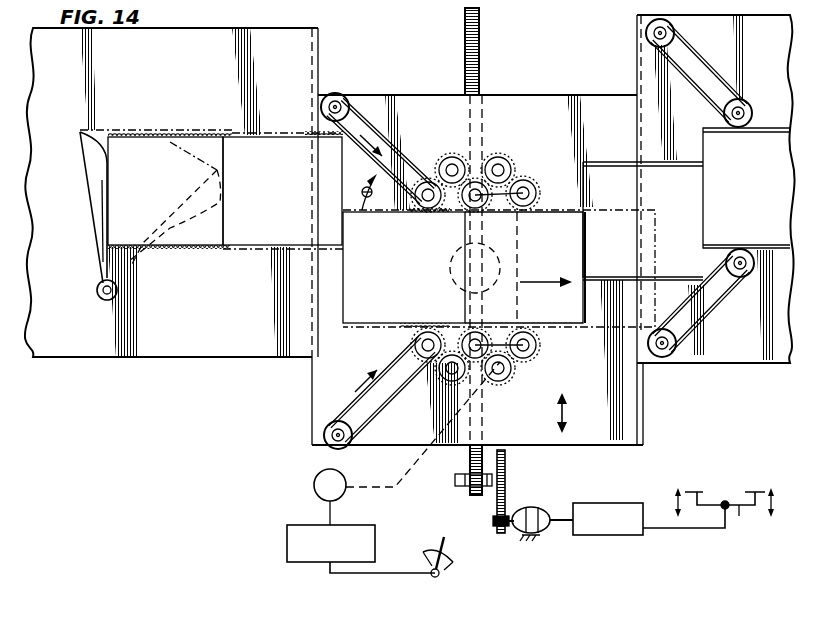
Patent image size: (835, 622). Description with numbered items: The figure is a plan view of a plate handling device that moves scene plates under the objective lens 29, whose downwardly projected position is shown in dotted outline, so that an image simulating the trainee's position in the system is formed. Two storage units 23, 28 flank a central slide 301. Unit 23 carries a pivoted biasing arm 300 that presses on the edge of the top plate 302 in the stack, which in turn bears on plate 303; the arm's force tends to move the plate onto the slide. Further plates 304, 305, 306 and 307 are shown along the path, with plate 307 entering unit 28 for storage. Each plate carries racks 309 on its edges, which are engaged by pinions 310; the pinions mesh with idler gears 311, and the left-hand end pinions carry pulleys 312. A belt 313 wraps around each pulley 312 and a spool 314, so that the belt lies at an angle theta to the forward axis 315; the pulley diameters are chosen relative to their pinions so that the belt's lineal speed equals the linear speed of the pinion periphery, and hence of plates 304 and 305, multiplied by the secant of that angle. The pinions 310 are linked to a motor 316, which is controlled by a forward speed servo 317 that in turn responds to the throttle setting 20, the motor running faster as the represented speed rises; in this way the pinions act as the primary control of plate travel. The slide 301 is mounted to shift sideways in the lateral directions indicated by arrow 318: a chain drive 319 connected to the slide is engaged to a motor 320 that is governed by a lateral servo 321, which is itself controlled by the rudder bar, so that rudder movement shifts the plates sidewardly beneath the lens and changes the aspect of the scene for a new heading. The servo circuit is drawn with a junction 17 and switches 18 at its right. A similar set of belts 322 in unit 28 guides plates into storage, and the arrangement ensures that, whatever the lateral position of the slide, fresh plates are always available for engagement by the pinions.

The storage unit 23 is at (118, 357).
The storage unit 28 is at (716, 364).
The objective lens 29 is at (455, 284).
The junction 17 is at (736, 517).
The limit switches 18 is at (697, 490).
The throttle setting 20 is at (446, 564).
The pivoted biasing arm 300 is at (93, 258).
The central slide 301 is at (645, 425).
The plate 302 is at (170, 206).
The plate 303 is at (283, 206).
The plate 304 is at (413, 258).
The plate 305 is at (562, 253).
The plate 306 is at (677, 204).
The plate 307 is at (770, 191).
The racks 309 is at (187, 253).
The pinions 310 is at (412, 342).
The idler gears 311 is at (443, 407).
The pulleys 312 is at (345, 100).
The belt 313 is at (383, 122).
The spool 314 is at (437, 166).
The forward axis 315 is at (527, 285).
The motor 316 is at (313, 484).
The forward speed servo 317 is at (314, 563).
The arrow 318 is at (566, 418).
The chain drive 319 is at (468, 456).
The motor 320 is at (534, 508).
The lateral servo 321 is at (633, 503).
The belts 322 is at (672, 65).